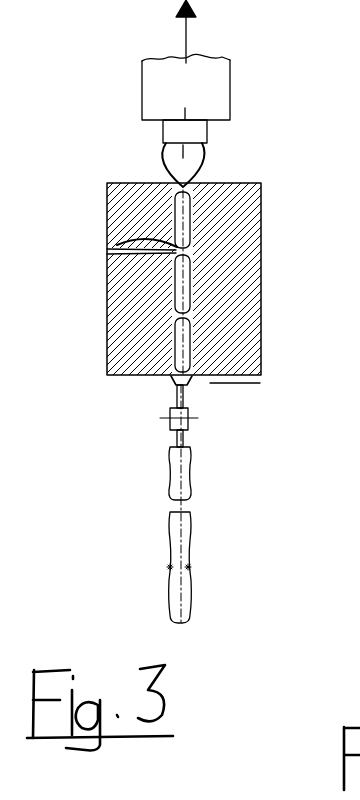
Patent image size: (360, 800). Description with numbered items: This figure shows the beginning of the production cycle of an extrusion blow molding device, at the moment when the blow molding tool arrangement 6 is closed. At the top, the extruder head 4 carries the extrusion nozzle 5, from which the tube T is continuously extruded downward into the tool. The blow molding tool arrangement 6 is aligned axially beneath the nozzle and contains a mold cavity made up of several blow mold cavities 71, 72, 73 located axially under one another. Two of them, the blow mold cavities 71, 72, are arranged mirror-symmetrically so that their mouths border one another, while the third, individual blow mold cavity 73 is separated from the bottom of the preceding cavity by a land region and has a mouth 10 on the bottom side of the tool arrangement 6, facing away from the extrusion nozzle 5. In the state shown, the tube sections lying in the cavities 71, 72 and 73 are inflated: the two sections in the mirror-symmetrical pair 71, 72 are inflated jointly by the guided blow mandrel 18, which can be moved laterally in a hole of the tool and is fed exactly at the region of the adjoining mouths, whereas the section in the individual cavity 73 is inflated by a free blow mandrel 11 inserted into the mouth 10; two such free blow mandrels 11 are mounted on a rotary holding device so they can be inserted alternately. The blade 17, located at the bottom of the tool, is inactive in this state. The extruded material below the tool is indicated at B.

The extruder head 4 is at (215, 80).
The extrusion nozzle 5 is at (200, 135).
The tube T is at (195, 165).
The blow molding tool arrangement 6 is at (252, 263).
The blow mold cavity 71 is at (178, 220).
The guided blow mandrel 18 is at (172, 250).
The blow mold cavity 72 is at (182, 283).
The individual blow mold cavity 73 is at (180, 342).
The mouth 10 is at (173, 386).
The free blow mandrel 11 is at (175, 398).
The blade 17 is at (245, 385).
The strand / fiber bundle B is at (182, 477).